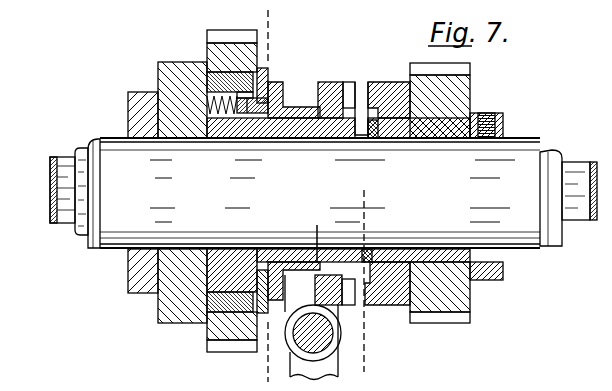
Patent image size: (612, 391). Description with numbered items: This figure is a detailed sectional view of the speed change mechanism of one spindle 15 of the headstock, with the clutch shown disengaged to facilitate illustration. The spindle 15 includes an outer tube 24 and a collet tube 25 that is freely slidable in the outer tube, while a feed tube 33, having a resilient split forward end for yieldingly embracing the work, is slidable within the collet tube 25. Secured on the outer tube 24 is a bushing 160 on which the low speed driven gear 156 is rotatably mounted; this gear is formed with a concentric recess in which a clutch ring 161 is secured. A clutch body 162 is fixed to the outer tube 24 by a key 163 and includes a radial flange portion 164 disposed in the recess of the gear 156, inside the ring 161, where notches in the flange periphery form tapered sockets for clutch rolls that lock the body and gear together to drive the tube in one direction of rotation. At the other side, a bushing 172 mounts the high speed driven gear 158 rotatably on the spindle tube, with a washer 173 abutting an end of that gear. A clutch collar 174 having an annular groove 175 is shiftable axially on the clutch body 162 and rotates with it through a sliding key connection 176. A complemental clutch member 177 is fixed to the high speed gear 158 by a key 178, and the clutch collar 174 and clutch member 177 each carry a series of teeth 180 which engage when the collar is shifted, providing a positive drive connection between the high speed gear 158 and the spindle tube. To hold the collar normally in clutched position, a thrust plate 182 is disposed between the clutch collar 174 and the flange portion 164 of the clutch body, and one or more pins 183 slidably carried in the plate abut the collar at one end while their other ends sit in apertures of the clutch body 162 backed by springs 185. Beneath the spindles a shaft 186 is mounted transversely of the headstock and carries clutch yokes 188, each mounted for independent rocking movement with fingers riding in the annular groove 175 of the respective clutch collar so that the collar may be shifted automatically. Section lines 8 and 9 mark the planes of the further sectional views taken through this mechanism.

The section line 8- 8 is at (275, 32).
The section line 9- 9 is at (368, 203).
The spindle 15 is at (521, 131).
The outer tube 24 is at (110, 140).
The collet tube 25 is at (79, 148).
The feed tube 33 is at (60, 194).
The low speed driven gear 156 is at (223, 38).
The high speed driven gear 158 is at (465, 82).
The bushing 160 is at (128, 99).
The clutch ring 161 is at (224, 306).
The clutch body 162 is at (273, 130).
The key 163 is at (250, 128).
The radial flange portion 164 is at (235, 256).
The bushing 172 is at (499, 119).
The washer 173 is at (372, 141).
The clutch collar 174 is at (328, 88).
The annular groove 175 is at (294, 96).
The sliding key connection 176 is at (361, 256).
The clutch member 177 is at (392, 88).
The key 178 is at (396, 300).
The teeth 180 is at (372, 82).
The thrust plate 182 is at (266, 76).
The pin 183 is at (245, 123).
The spring 185 is at (218, 122).
The shaft 186 is at (302, 360).
The clutch yoke 188 is at (271, 322).